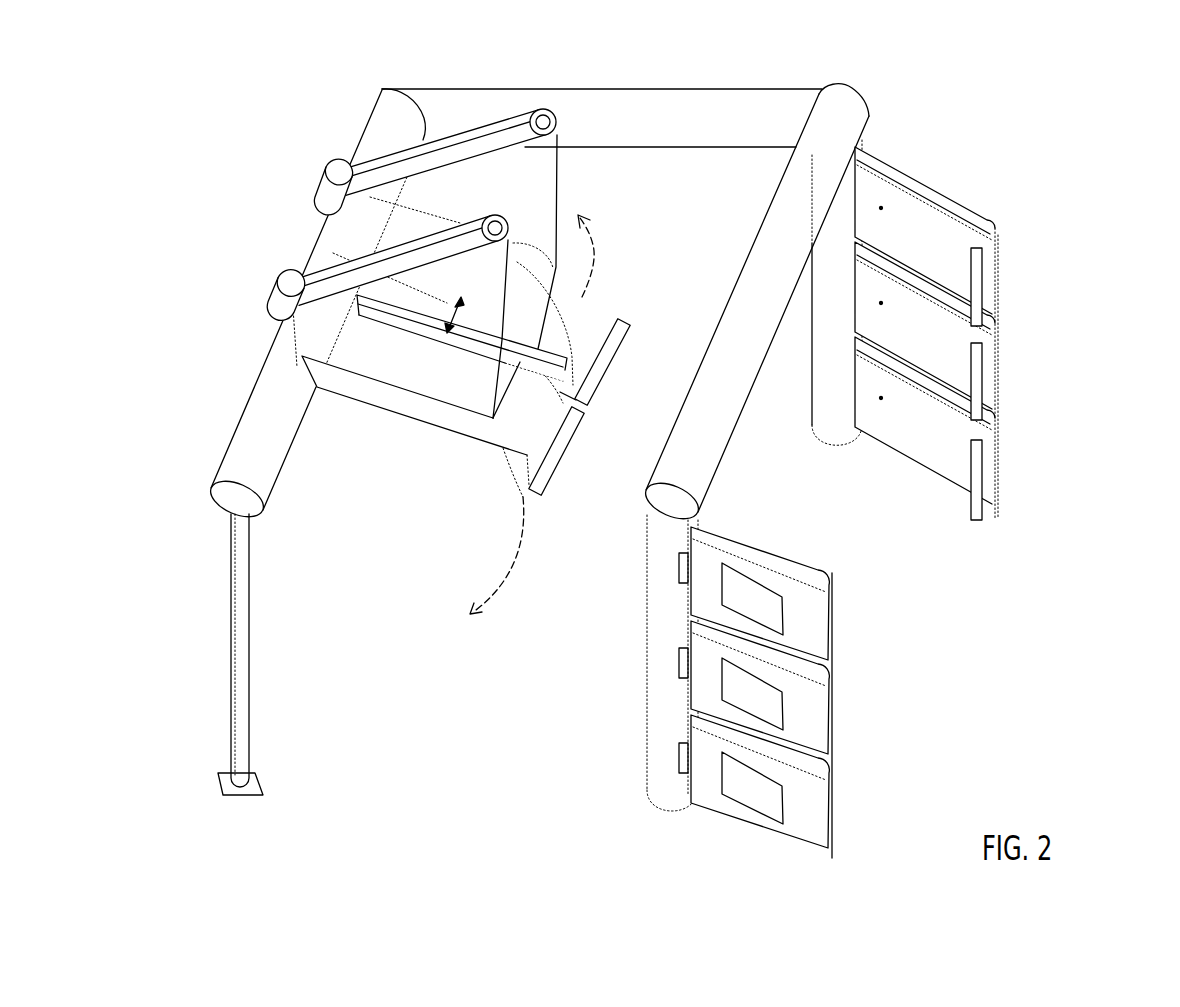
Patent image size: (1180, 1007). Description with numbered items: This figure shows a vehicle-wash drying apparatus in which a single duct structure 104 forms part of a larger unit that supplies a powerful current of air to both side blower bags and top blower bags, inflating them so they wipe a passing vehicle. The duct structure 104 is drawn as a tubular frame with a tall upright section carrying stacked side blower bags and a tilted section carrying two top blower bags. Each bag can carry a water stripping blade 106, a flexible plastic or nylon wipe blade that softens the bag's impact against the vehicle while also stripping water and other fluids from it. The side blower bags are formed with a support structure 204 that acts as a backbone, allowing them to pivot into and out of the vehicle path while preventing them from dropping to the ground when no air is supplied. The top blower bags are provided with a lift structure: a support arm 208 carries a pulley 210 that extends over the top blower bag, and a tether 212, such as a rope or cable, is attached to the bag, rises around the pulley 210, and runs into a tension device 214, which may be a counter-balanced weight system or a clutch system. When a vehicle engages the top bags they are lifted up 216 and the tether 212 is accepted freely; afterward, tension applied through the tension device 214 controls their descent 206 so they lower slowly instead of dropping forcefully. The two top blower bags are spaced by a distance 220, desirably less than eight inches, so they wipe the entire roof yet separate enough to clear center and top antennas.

The duct structure 104 is at (722, 393).
The water stripping blade 106 is at (605, 343).
The support structure 204 is at (705, 683).
The descent 206 is at (503, 582).
The support arm 208 is at (393, 162).
The pulley 210 is at (538, 108).
The tether 212 is at (557, 172).
The tension device 214 is at (340, 178).
The lifted up 216 is at (597, 253).
The distance 220 is at (456, 305).